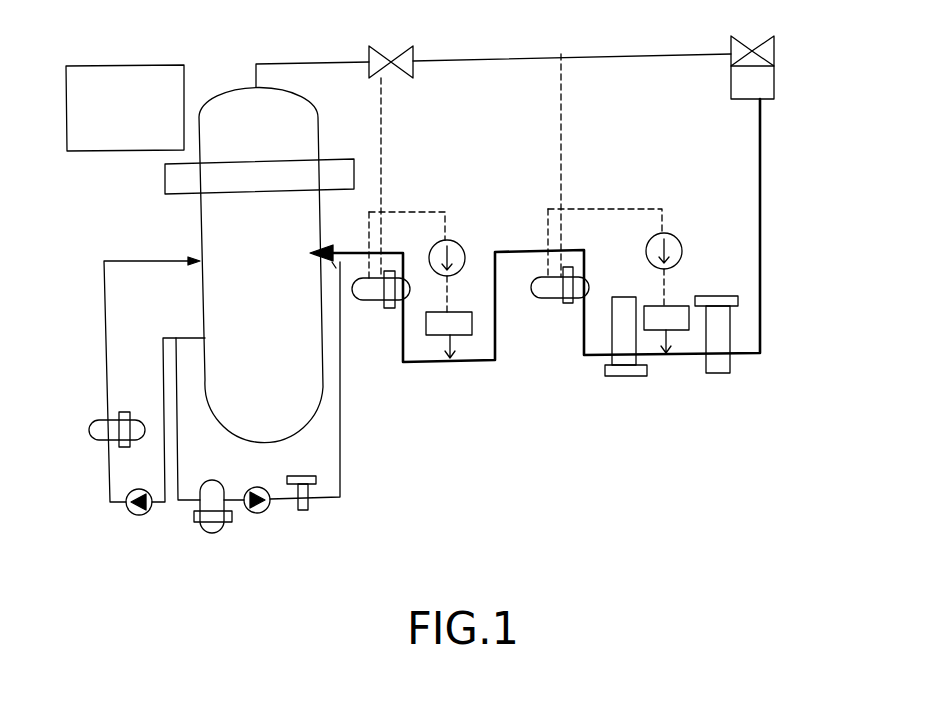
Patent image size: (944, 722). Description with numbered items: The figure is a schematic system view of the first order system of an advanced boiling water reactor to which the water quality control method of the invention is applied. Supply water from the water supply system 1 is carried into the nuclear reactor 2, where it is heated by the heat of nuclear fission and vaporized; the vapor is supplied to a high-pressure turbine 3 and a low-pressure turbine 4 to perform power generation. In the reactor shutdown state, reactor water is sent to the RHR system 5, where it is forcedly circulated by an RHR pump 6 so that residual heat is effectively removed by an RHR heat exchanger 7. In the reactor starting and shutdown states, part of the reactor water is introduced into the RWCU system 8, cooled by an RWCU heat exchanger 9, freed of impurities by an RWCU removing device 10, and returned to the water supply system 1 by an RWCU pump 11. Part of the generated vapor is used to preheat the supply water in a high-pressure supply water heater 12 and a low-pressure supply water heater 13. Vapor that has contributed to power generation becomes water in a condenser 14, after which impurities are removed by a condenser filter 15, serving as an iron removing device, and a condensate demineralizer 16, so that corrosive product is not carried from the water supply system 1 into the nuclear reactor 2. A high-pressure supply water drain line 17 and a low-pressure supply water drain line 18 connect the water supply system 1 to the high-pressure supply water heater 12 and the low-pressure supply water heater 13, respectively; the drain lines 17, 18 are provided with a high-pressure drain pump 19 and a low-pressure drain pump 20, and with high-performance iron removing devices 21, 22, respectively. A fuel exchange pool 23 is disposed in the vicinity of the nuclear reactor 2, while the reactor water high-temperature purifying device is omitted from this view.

The water supply system 1 is at (352, 251).
The nuclear reactor 2 is at (254, 267).
The high-pressure turbine 3 is at (402, 52).
The low-pressure turbine 4 is at (766, 40).
The RHR system 5 is at (100, 315).
The RHR pump 6 is at (139, 516).
The RHR heat exchanger 7 is at (89, 428).
The RWCU system 8 is at (344, 458).
The RWCU heat exchanger 9 is at (214, 536).
The RWCU removing device 10 is at (303, 512).
The RWCU pump 11 is at (257, 514).
The high-pressure supply water heater 12 is at (370, 302).
The low-pressure supply water heater 13 is at (552, 300).
The condenser 14 is at (777, 83).
The condenser filter 15 is at (722, 375).
The condensate demineralizer 16 is at (625, 378).
The high-pressure supply water drain line 17 is at (430, 212).
The low-pressure supply water drain line 18 is at (647, 209).
The high-pressure drain pump 19 is at (462, 242).
The low-pressure drain pump 20 is at (679, 236).
The high-performance iron removing device 21 is at (462, 337).
The high-performance iron removing device 22 is at (678, 333).
The fuel exchange pool 23 is at (150, 66).